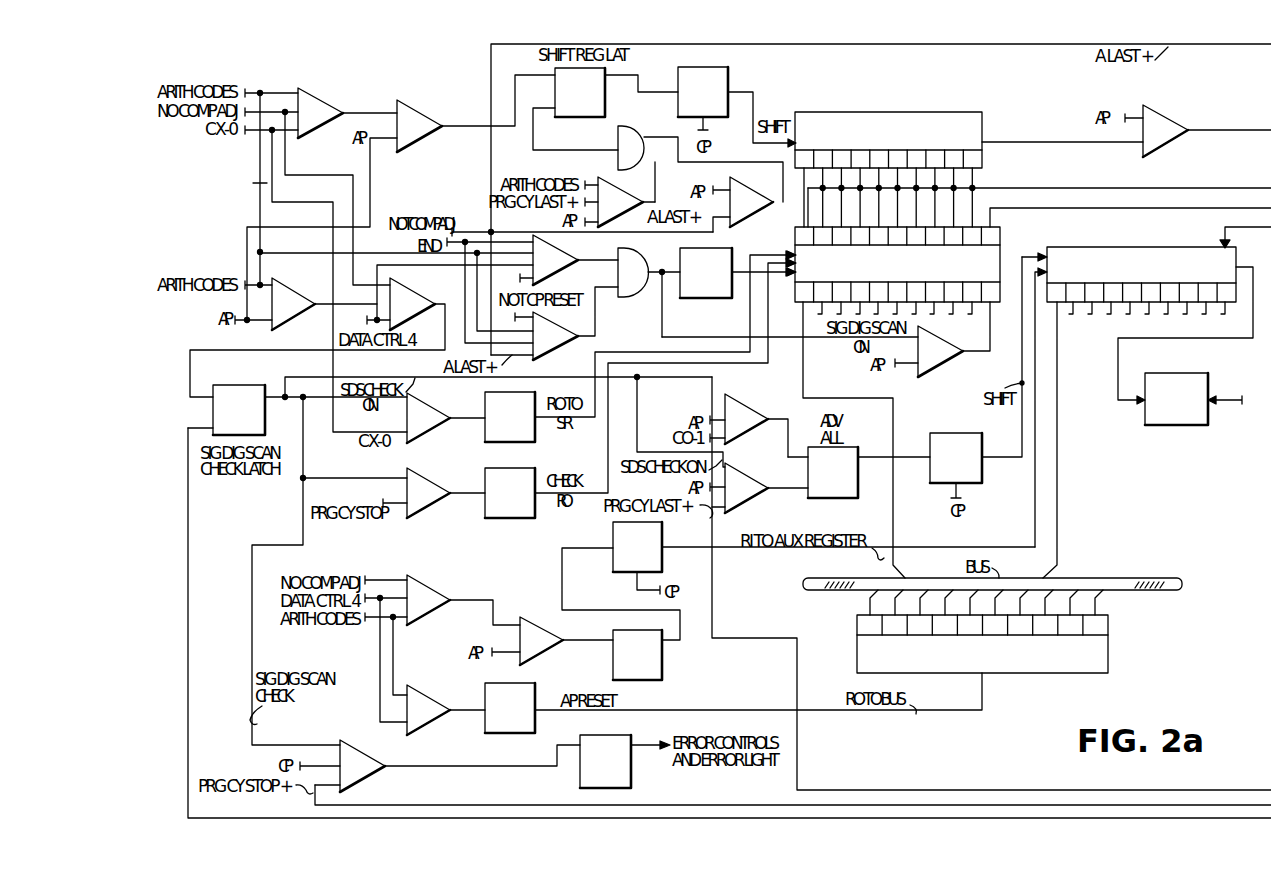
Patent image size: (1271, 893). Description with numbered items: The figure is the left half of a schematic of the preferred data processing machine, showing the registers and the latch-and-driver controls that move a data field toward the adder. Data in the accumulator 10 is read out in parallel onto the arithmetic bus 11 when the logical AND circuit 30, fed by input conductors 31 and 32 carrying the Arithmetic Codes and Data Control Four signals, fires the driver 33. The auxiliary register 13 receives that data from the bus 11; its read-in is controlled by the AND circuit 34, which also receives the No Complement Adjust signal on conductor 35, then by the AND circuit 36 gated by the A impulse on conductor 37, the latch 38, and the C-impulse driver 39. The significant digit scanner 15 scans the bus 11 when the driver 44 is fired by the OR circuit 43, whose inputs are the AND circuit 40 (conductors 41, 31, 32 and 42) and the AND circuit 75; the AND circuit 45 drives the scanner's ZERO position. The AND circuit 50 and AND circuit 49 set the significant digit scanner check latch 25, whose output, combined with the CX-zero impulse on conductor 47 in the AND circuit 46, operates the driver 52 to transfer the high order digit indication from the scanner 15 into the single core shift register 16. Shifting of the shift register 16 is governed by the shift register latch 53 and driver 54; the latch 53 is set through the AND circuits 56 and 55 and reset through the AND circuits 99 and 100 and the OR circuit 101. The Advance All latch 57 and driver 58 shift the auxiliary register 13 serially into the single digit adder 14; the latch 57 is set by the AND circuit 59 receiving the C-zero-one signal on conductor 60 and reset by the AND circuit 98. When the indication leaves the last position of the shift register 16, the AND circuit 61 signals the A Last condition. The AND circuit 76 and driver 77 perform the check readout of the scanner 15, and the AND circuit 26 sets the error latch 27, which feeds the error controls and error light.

The accumulator 10 is at (1108, 655).
The arithmetic bus 11 is at (1155, 578).
The auxiliary register 13 is at (1163, 253).
The single digit adder 14 is at (1182, 373).
The significant digit scanner 15 is at (1000, 238).
The single core shift register 16 is at (944, 113).
The significant digit scanner check latch 25 is at (243, 388).
The logical AND circuit 26 is at (358, 750).
The error latch 27 is at (594, 738).
The logical AND circuit 30 is at (427, 694).
The input conductor 31 is at (398, 652).
The input conductor 32 is at (452, 264).
The driver 33 is at (510, 733).
The logical AND circuit 34 is at (424, 584).
The input conductor 35 is at (337, 180).
The logical AND circuit 36 is at (540, 617).
The input conductor 37 is at (250, 322).
The latch 38 is at (662, 660).
The driver 39 is at (613, 533).
The logical AND circuit 40 is at (570, 270).
The input conductor 41 is at (702, 234).
The input conductor 42 is at (540, 318).
The logical OR circuit 43 is at (634, 252).
The driver 44 is at (703, 298).
The logical AND circuit 45 is at (944, 367).
The logical AND circuit 46 is at (432, 432).
The input conductor 47 is at (337, 432).
The logical AND circuit 49 is at (437, 318).
The logical AND circuit 50 is at (297, 286).
The driver 52 is at (532, 442).
The shift register latch 53 is at (605, 107).
The driver 54 is at (728, 84).
The logical AND circuit 55 is at (410, 108).
The logical AND circuit 56 is at (315, 96).
The Advance All latch 57 is at (858, 488).
The driver 58 is at (982, 480).
The logical AND circuit 59 is at (748, 400).
The input conductor 60 is at (725, 447).
The logical AND circuit 61 is at (1155, 114).
The logical AND circuit 75 is at (553, 352).
The logical AND circuit 76 is at (432, 506).
The driver 77 is at (512, 518).
The logical AND circuit 98 is at (748, 500).
The logical AND circuit 99 is at (745, 192).
The logical AND circuit 100 is at (620, 195).
The logical OR circuit 101 is at (618, 137).